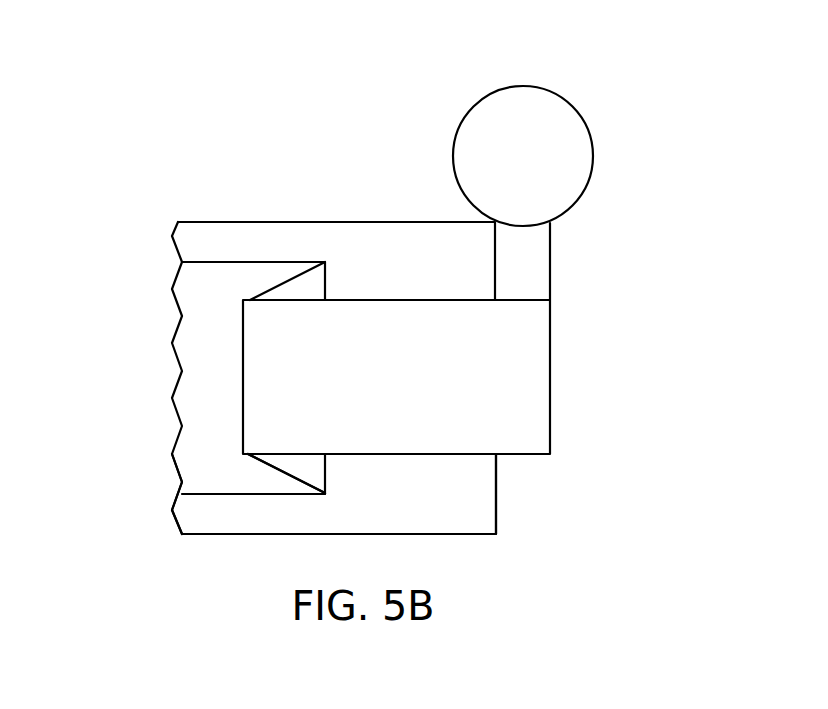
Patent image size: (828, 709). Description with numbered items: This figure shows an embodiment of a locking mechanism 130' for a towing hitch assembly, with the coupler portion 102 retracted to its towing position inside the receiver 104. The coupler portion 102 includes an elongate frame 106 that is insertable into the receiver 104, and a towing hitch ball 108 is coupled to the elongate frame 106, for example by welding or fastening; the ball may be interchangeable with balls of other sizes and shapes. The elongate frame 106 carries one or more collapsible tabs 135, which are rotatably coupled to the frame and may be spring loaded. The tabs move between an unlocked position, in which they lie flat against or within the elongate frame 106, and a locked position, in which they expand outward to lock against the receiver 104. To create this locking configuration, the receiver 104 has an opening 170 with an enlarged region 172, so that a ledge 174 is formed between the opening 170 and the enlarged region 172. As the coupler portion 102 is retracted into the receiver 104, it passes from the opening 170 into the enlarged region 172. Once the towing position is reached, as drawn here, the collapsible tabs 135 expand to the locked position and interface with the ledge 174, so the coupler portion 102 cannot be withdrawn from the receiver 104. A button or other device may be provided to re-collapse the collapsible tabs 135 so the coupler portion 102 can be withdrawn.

The coupler portion 102 is at (612, 118).
The receiver 104 is at (255, 222).
The elongate frame 106 is at (440, 456).
The towing hitch ball 108 is at (522, 87).
The locking mechanism 130' is at (114, 507).
The collapsible tabs 135 is at (288, 478).
The opening 170 is at (497, 457).
The enlarged region 172 is at (220, 261).
The ledge 174 is at (326, 277).